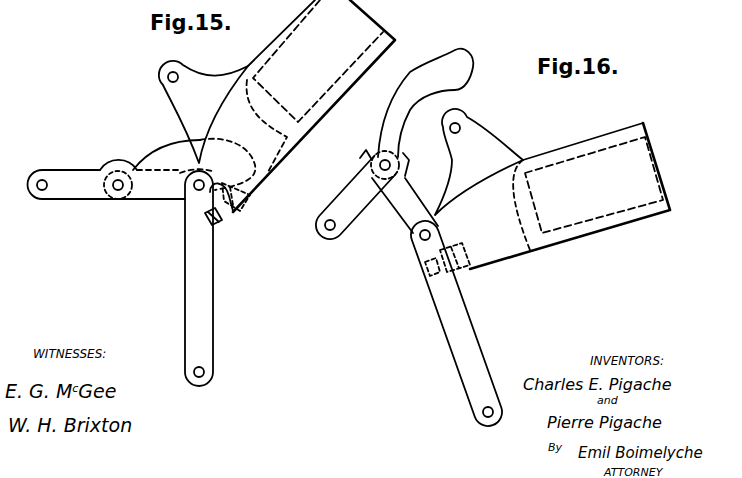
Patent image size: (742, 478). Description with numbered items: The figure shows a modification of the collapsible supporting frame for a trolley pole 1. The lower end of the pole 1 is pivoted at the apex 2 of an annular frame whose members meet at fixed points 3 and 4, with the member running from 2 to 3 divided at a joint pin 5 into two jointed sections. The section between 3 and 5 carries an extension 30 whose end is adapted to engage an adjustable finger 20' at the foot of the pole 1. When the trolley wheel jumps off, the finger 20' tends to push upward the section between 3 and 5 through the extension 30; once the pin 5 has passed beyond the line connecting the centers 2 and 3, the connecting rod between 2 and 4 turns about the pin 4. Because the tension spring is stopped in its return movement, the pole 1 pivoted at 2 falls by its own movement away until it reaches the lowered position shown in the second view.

In FIG. 15, the pole 1 is at (379, 28).
In FIG. 16, the pole 1 is at (590, 215).
In FIG. 15, the apex pivot 2 is at (193, 193).
In FIG. 16, the apex pivot 2 is at (421, 241).
In FIG. 15, the fixed pivot point 3 is at (44, 180).
In FIG. 16, the fixed pivot point 3 is at (330, 233).
In FIG. 15, the fixed pivot point 4 is at (207, 373).
In FIG. 16, the fixed pivot point 4 is at (486, 413).
In FIG. 15, the joint pin 5 is at (118, 193).
In FIG. 16, the joint pin 5 is at (380, 165).
In FIG. 15, the extension 30 is at (222, 162).
In FIG. 16, the extension 30 is at (467, 60).
In FIG. 15, the adjustable finger 20' is at (255, 197).
In FIG. 16, the adjustable finger 20' is at (461, 254).